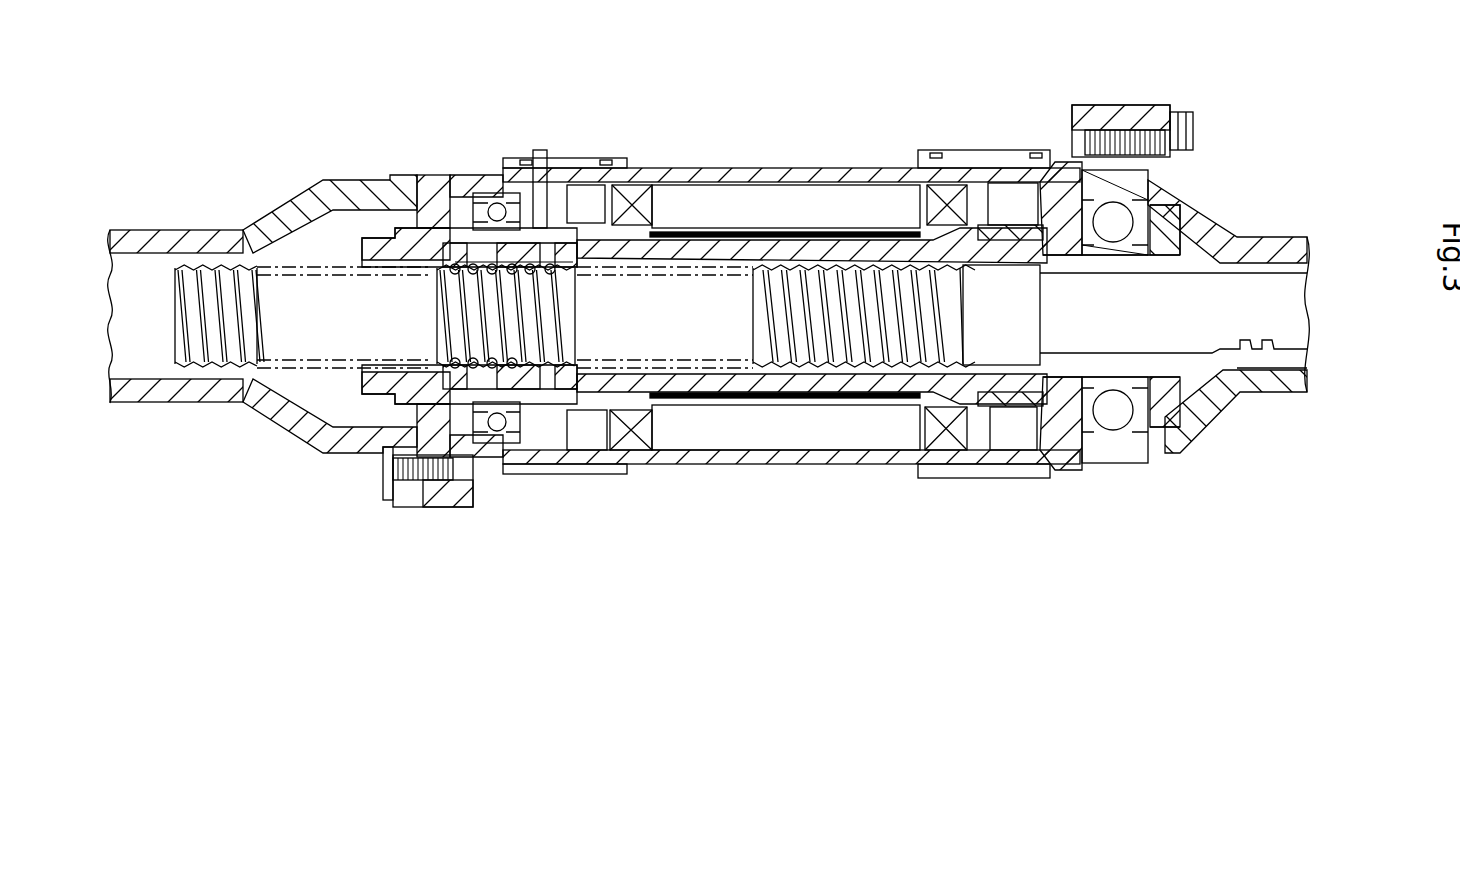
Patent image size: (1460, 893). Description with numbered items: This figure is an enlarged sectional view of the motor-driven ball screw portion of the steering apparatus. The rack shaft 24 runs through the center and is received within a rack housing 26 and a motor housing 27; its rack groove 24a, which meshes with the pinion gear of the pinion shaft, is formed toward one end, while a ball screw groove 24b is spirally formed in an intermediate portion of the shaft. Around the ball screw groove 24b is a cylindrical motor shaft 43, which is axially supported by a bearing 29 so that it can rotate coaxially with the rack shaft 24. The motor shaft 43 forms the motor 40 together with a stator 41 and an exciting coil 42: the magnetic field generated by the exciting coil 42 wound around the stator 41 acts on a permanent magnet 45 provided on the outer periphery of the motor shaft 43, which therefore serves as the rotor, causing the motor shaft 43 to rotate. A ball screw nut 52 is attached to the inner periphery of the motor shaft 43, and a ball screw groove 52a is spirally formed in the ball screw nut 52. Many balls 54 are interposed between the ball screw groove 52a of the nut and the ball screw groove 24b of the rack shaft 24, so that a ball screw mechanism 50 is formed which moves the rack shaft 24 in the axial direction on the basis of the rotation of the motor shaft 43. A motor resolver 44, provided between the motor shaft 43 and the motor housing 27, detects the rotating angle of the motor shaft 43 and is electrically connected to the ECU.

The rack shaft 24 is at (140, 337).
The rack groove 24a is at (1243, 350).
The ball screw groove 24b is at (258, 316).
The rack housing 26 is at (298, 192).
The motor housing 27 is at (888, 168).
The bearing 29 is at (507, 445).
The motor 40 is at (838, 180).
The stator 41 is at (720, 190).
The exciting coil 42 is at (643, 188).
The motor shaft 43 is at (725, 395).
The motor resolver 44 is at (1020, 430).
The permanent magnet 45 is at (788, 230).
The ball screw mechanism 50 is at (445, 223).
The ball screw nut 52 is at (535, 263).
The ball screw groove 52a is at (455, 273).
The balls 54 is at (495, 262).